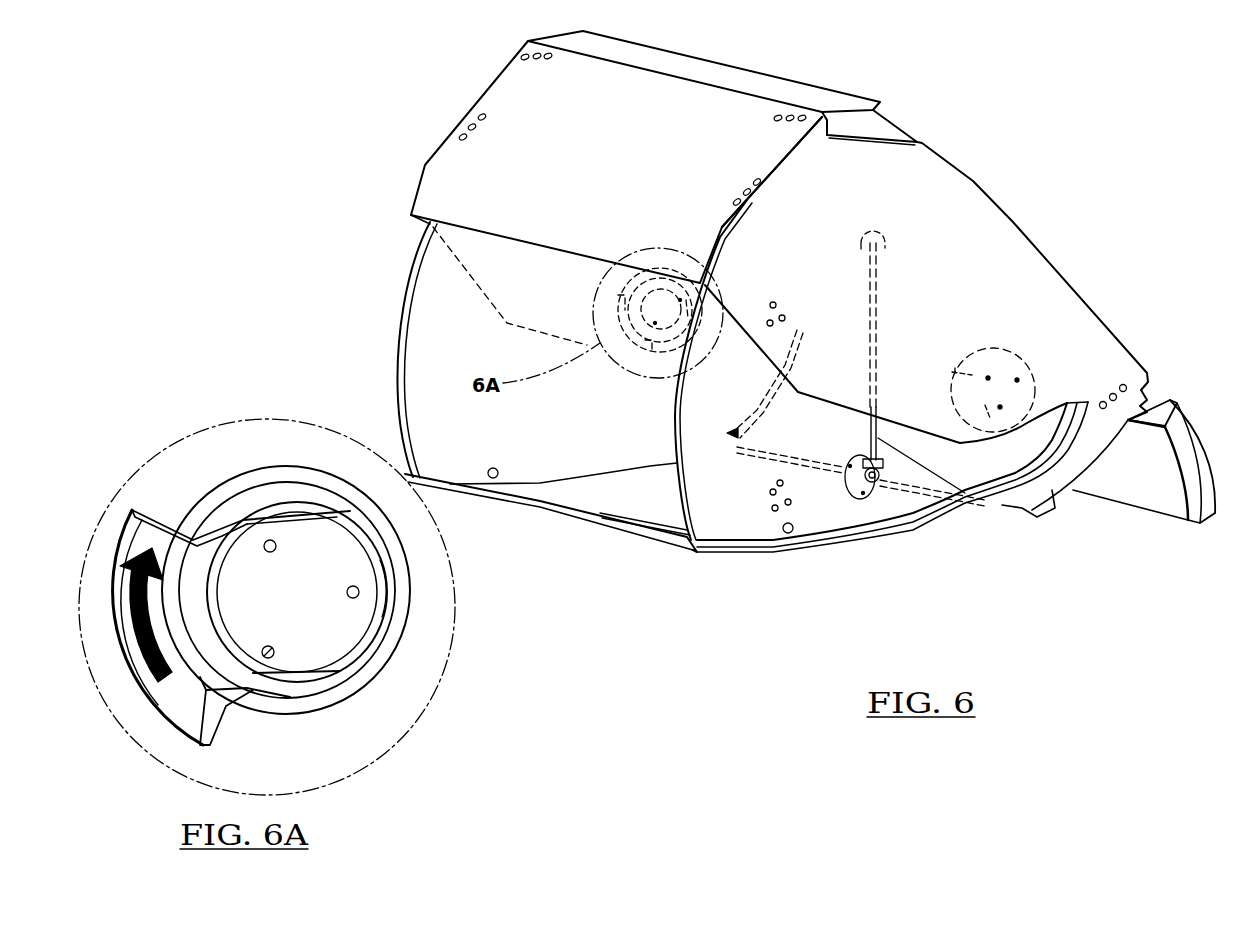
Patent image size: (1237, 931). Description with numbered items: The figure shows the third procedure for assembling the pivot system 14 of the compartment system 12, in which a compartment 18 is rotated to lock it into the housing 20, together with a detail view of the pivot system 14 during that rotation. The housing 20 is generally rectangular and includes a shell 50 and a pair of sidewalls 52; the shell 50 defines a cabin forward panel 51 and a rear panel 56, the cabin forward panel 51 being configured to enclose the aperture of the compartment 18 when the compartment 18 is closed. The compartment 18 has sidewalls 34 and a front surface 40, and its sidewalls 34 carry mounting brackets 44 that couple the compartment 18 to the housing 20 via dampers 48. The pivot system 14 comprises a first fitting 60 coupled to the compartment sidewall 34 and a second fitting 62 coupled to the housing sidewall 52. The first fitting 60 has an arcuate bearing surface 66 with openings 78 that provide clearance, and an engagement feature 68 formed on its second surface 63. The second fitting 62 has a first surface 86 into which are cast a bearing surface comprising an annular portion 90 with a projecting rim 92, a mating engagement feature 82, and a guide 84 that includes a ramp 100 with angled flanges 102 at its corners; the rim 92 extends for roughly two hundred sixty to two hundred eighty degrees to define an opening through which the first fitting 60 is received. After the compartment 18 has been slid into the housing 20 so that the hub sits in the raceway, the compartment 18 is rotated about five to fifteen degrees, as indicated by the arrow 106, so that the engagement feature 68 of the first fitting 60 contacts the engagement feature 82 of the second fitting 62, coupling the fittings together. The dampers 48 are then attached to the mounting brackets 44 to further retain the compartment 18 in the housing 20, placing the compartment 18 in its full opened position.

In FIG. 6, the compartment system 12 is at (757, 613).
In FIG. 6, the pivot system 14 is at (1036, 372).
In FIG. 6A, the pivot system 14 is at (237, 444).
In FIG. 6, the compartment 18 is at (662, 562).
In FIG. 6, the housing 20 is at (968, 173).
In FIG. 6, the sidewalls 34 is at (432, 297).
In FIG. 6, the front surface 40 is at (618, 528).
In FIG. 6, the mounting brackets 44 is at (882, 495).
In FIG. 6, the damper 48 is at (965, 493).
In FIG. 6, the shell 50 is at (770, 72).
In FIG. 6, the cabin forward panel 51 is at (647, 108).
In FIG. 6, the sidewalls 52 is at (993, 235).
In FIG. 6, the rear panel 56 is at (893, 118).
In FIG. 6A, the first fitting 60 is at (350, 510).
In FIG. 6A, the second fitting 62 is at (308, 720).
In FIG. 6A, the second surface 63 is at (387, 605).
In FIG. 6A, the bearing surface 66 is at (192, 743).
In FIG. 6A, the engagement feature 68 is at (215, 663).
In FIG. 6A, the openings 78 is at (328, 510).
In FIG. 6A, the engagement feature 82 is at (365, 670).
In FIG. 6A, the guide 84 is at (153, 693).
In FIG. 6A, the first surface 86 is at (302, 680).
In FIG. 6A, the annular portion 90 is at (188, 757).
In FIG. 6A, the rim 92 is at (203, 507).
In FIG. 6A, the ramp 100 is at (138, 667).
In FIG. 6A, the flanges 102 is at (145, 510).
In FIG. 6A, the arrow 106 is at (137, 637).